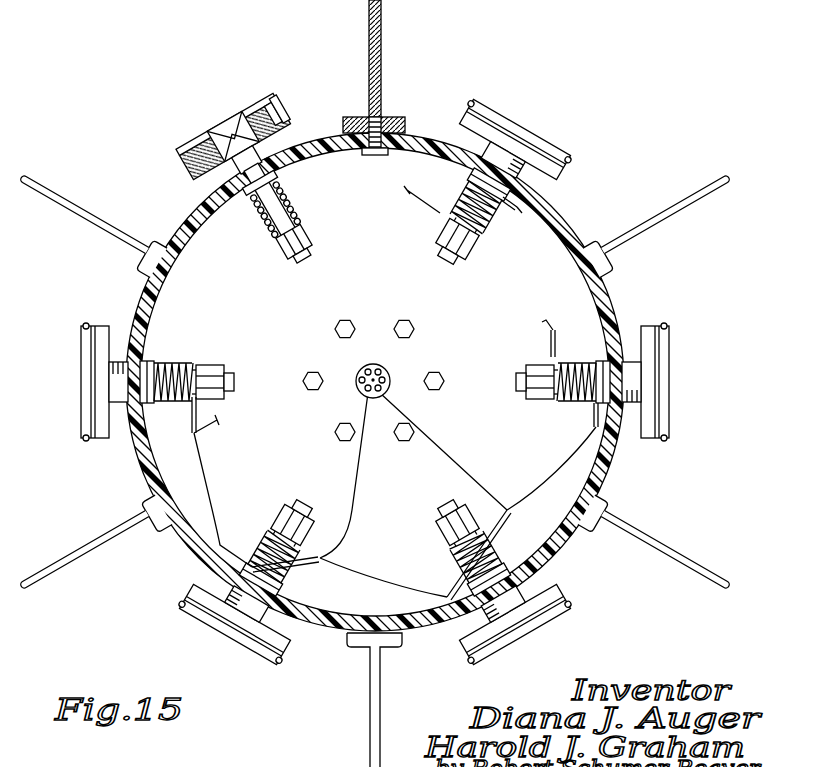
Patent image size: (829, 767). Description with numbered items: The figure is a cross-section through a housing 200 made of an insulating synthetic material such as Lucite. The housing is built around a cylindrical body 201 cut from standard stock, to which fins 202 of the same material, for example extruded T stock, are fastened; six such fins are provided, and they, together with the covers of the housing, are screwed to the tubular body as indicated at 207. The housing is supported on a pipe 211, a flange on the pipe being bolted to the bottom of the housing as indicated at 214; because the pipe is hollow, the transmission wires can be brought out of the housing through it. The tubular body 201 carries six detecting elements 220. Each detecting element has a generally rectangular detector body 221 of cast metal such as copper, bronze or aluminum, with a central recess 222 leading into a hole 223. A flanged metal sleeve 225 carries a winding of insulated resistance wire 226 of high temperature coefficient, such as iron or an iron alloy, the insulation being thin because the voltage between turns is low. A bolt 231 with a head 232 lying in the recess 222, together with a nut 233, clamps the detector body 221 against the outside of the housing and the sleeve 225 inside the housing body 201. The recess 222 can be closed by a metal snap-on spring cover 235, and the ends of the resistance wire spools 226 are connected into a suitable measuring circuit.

The housing 200 is at (181, 205).
The cylindrical body 201 is at (133, 308).
The fins 202 is at (90, 218).
The screw 207 is at (382, 150).
The pipe 211 is at (390, 373).
The bolt 214 is at (305, 377).
The detecting element 220 is at (254, 167).
The detector body 221 is at (288, 120).
The central recess 222 is at (247, 112).
The hole 223 is at (287, 118).
The flanged metal sleeve 225 is at (262, 238).
The resistance wire 226 is at (313, 247).
The bolt 231 is at (288, 207).
The head 232 is at (240, 140).
The nut 233 is at (294, 258).
The snap-on spring cover 235 is at (205, 137).